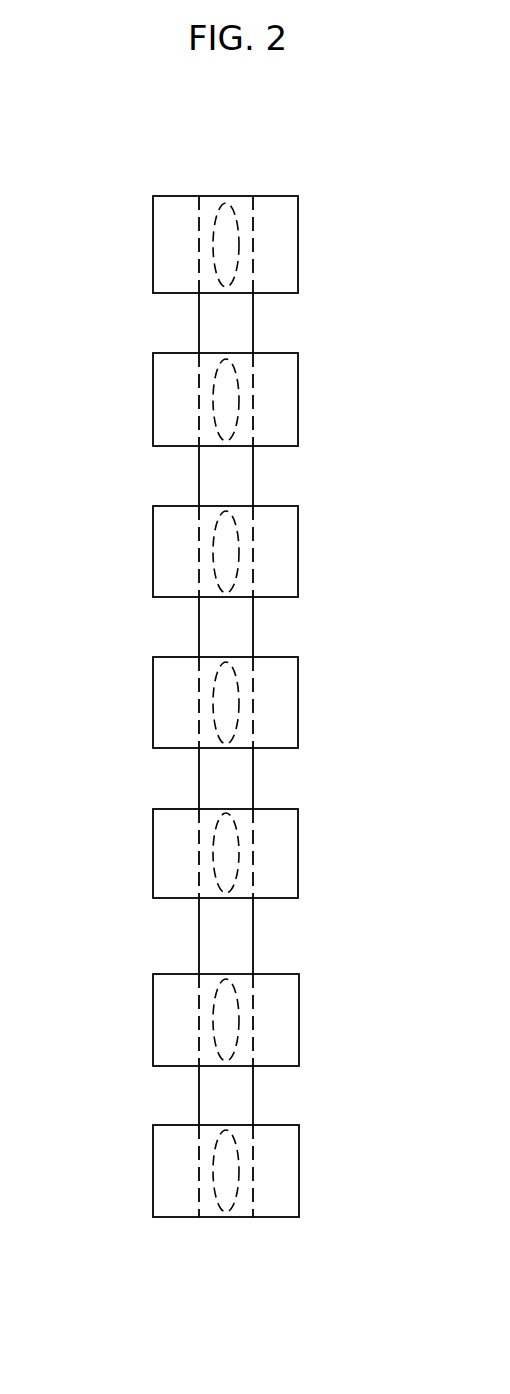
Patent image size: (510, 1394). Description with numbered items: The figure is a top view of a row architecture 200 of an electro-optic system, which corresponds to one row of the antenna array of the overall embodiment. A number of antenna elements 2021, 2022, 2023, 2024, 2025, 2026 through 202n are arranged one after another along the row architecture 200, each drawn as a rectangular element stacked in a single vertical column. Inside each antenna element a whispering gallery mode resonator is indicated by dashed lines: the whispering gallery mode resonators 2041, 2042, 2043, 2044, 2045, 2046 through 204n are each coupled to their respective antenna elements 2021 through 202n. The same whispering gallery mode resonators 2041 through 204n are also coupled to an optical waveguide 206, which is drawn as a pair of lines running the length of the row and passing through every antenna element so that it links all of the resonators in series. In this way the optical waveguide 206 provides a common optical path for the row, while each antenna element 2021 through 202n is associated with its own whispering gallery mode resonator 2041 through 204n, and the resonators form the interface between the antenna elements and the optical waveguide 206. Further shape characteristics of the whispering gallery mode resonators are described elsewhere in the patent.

The row architecture 200 is at (96, 164).
The antenna element 2021 is at (299, 222).
The antenna element 2022 is at (298, 388).
The antenna element 2023 is at (300, 545).
The antenna element 2024 is at (300, 695).
The antenna element 2025 is at (300, 845).
The antenna element 2026 is at (303, 1005).
The antenna element 202n is at (300, 1160).
The whispering gallery mode resonator 2041 is at (208, 257).
The whispering gallery mode resonator 2042 is at (208, 412).
The whispering gallery mode resonator 2043 is at (208, 560).
The whispering gallery mode resonator 2044 is at (205, 712).
The whispering gallery mode resonator 2045 is at (208, 862).
The whispering gallery mode resonator 2046 is at (215, 1033).
The whispering gallery mode resonator 204n is at (208, 1180).
The optical waveguide 206 is at (219, 326).